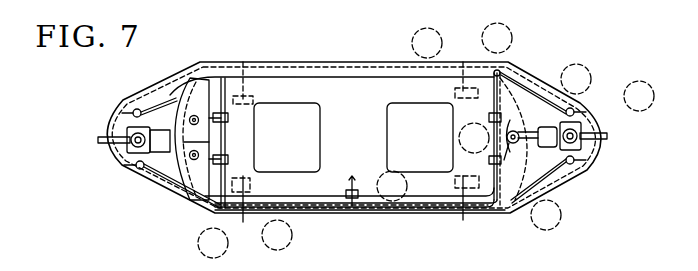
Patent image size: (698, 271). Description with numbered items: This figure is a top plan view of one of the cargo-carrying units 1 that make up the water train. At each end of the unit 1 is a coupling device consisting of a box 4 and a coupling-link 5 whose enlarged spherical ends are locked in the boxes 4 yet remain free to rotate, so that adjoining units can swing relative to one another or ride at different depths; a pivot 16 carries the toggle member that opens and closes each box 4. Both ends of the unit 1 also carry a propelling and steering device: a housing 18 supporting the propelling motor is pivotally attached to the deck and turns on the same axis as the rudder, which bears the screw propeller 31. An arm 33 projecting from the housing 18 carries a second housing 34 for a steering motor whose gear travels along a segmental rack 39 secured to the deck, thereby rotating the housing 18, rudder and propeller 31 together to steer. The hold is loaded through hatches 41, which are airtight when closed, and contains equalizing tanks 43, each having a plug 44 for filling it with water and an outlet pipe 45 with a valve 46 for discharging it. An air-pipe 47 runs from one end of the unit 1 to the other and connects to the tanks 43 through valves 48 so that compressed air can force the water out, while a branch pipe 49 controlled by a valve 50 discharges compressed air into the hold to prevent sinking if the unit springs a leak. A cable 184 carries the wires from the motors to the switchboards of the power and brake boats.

The cargo-carrying unit 1 is at (354, 137).
The box 4 is at (127, 131).
The coupling-link 5 is at (110, 150).
The pivot 16 is at (546, 130).
The housing 18 is at (164, 147).
The screw propeller 31 is at (127, 163).
The arm 33 is at (527, 150).
The housing 34 is at (519, 143).
The segmental rack 39 is at (511, 120).
The hatch 41 is at (353, 137).
The equalizing tank 43 is at (180, 118).
The plug 44 is at (194, 116).
The outlet pipe 45 is at (240, 63).
The valve 46 is at (236, 185).
The air-pipe 47 is at (323, 212).
The valve 48 is at (228, 118).
The branch pipe 49 is at (358, 195).
The valve 50 is at (347, 200).
The cable 184 is at (158, 103).